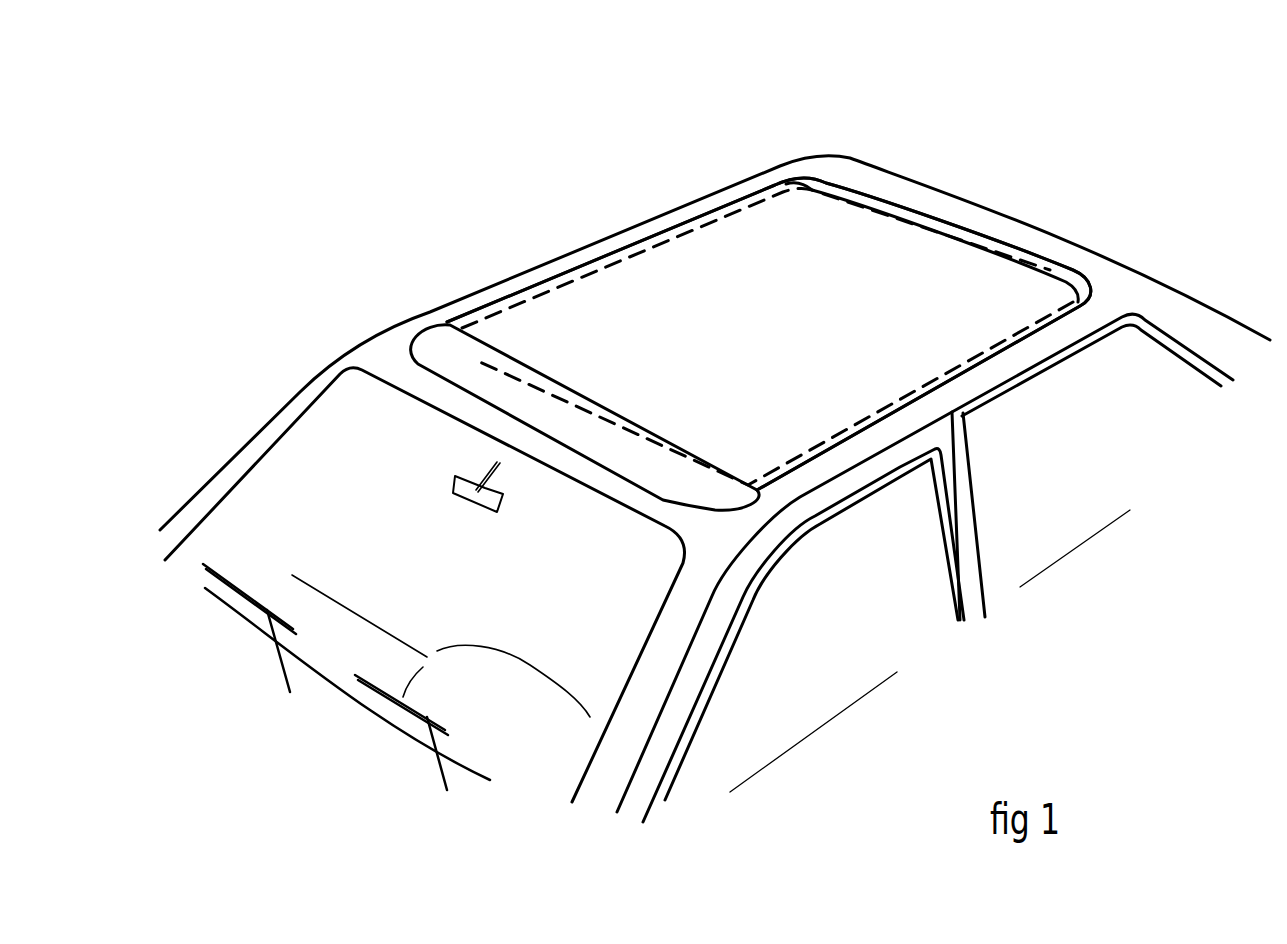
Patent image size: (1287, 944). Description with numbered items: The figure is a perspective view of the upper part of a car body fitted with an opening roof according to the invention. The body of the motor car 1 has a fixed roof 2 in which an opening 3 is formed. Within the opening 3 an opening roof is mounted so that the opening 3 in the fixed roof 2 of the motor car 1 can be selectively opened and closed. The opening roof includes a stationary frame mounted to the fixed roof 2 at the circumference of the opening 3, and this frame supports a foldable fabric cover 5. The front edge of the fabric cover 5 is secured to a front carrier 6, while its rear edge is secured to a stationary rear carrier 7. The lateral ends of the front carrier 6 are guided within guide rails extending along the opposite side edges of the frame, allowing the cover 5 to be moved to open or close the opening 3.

The motor car 1 is at (480, 277).
The fixed roof 2 is at (640, 227).
The opening 3 is at (568, 293).
The foldable fabric cover 5 is at (733, 237).
The front carrier 6 is at (488, 380).
The stationary rear carrier 7 is at (803, 185).